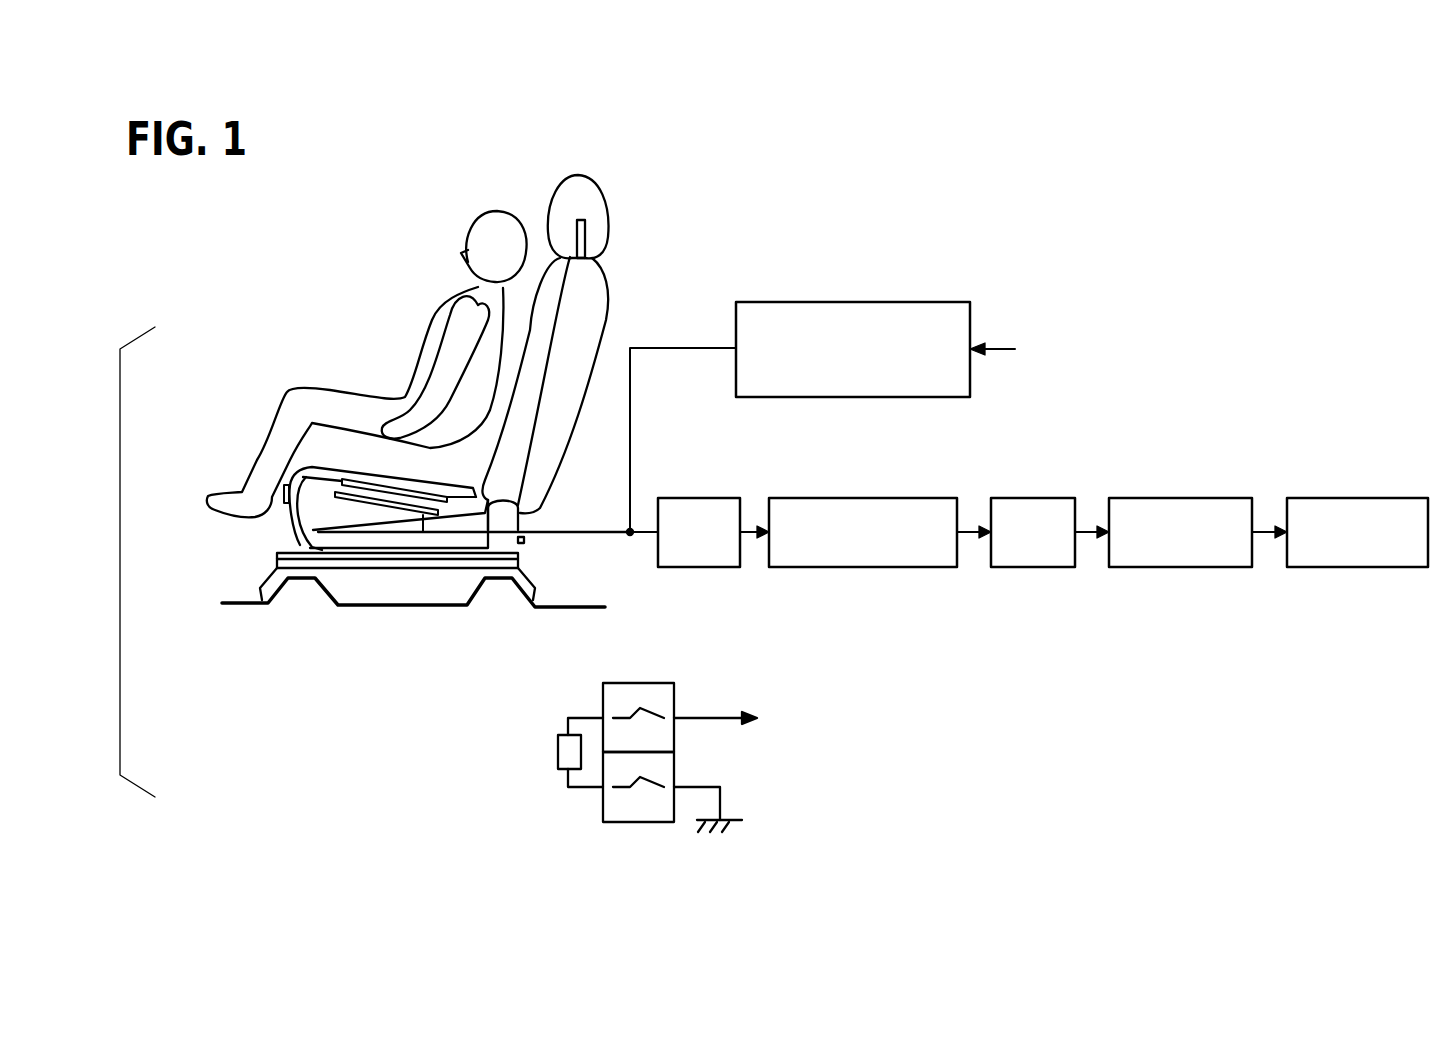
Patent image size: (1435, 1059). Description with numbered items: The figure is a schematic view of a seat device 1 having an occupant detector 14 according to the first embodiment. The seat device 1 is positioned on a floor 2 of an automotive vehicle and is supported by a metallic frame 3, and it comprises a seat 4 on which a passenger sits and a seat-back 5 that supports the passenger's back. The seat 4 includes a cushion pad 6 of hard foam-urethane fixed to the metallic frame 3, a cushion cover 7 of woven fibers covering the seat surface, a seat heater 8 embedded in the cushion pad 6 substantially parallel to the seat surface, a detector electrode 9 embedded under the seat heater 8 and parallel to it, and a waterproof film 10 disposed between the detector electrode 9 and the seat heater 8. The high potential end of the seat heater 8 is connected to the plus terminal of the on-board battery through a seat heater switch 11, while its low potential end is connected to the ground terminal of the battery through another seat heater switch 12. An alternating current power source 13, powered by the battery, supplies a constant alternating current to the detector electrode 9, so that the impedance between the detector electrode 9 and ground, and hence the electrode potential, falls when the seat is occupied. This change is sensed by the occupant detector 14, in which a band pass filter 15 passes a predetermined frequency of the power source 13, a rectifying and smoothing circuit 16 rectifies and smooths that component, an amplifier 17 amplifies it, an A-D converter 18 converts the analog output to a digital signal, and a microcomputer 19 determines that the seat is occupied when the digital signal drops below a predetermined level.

The seat device 1 is at (622, 265).
The floor 2 is at (418, 607).
The metallic frame 3 is at (372, 573).
The seat 4 is at (284, 516).
The seat-back 5 is at (523, 469).
The cushion pad 6 is at (313, 548).
The cushion cover 7 is at (295, 468).
The seat heater 8 is at (398, 488).
The detector electrode 9 is at (355, 502).
The waterproof film 10 is at (333, 488).
The seat heater switch 11 is at (661, 683).
The seat heater switch 12 is at (629, 822).
The alternating current power source 13 is at (882, 302).
The occupant detector 14 is at (1105, 440).
The band pass filter 15 is at (700, 498).
The rectifying and smoothing circuit 16 is at (887, 498).
The amplifier 17 is at (1025, 498).
The A-D converter 18 is at (1173, 498).
The microcomputer 19 is at (1361, 498).